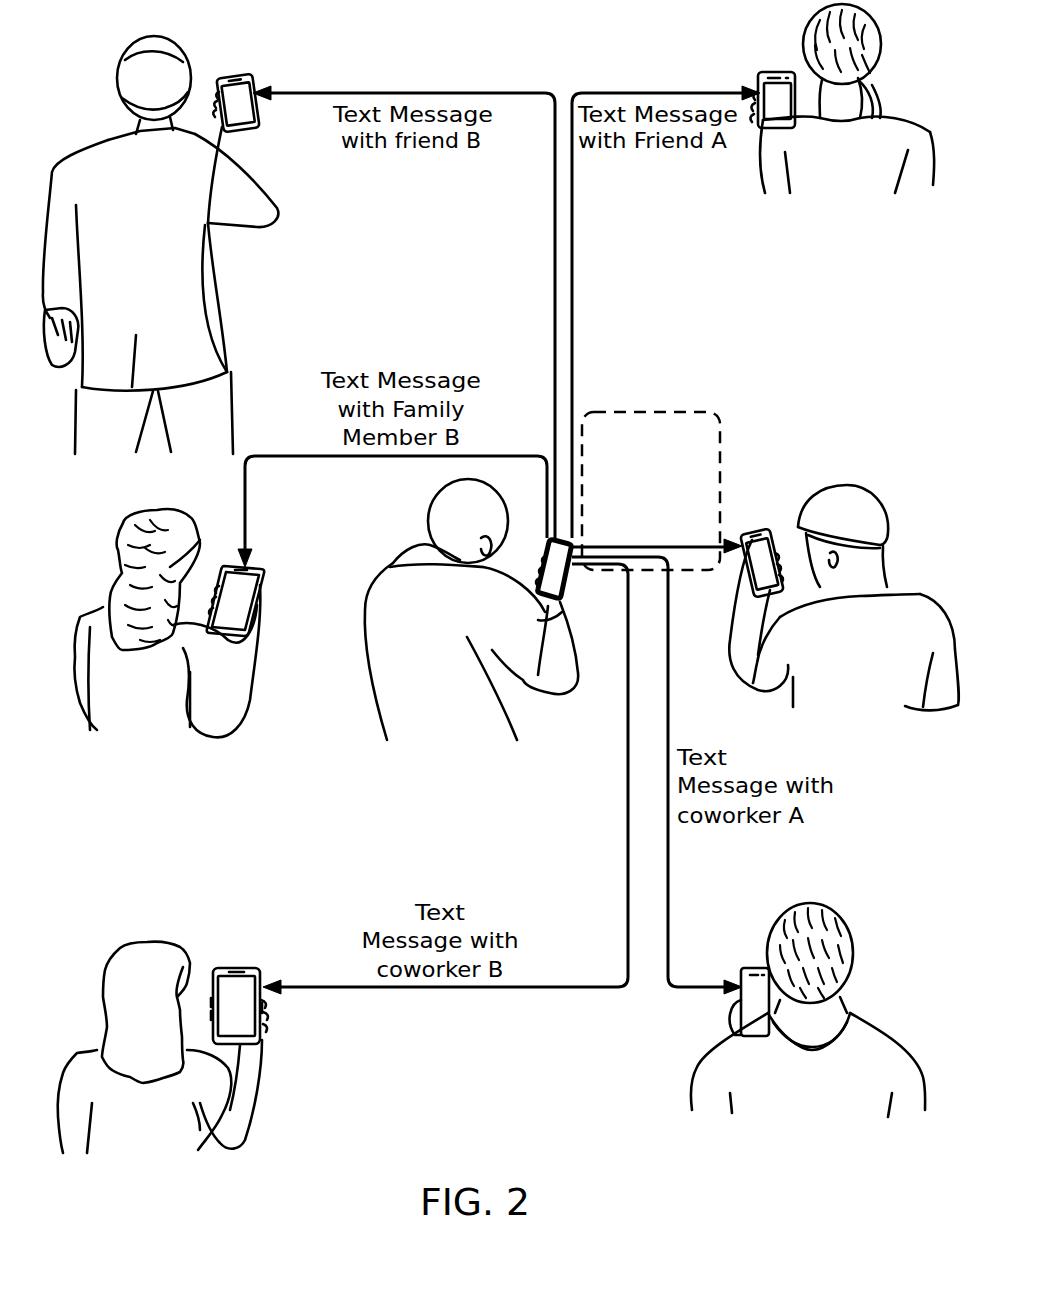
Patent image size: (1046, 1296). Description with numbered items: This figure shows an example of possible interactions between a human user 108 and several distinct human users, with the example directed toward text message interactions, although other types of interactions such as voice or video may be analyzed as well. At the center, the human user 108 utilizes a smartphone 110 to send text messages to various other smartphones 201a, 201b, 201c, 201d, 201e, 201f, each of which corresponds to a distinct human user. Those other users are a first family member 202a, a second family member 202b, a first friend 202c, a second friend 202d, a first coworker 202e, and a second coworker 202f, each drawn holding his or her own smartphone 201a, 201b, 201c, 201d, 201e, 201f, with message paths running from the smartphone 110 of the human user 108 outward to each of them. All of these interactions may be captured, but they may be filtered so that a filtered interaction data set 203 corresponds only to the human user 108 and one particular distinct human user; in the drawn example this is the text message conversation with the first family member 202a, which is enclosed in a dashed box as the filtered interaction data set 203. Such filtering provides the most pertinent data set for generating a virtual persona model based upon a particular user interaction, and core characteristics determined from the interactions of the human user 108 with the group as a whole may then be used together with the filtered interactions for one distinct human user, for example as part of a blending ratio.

The human user 108 is at (471, 601).
The smartphone 110 is at (545, 540).
The smartphone 201a is at (756, 531).
The smartphone 201b is at (262, 568).
The smartphone 201c is at (757, 76).
The smartphone 201d is at (241, 76).
The smartphone 201e is at (753, 968).
The smartphone 201f is at (238, 968).
The first family member 202a is at (844, 579).
The second family member 202b is at (207, 621).
The first friend 202c is at (791, 105).
The second friend 202d is at (196, 241).
The first coworker 202e is at (805, 998).
The second coworker 202f is at (178, 1016).
The filtered interaction data set 203 is at (647, 412).